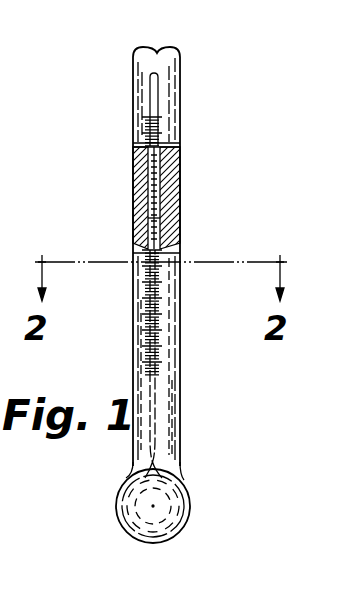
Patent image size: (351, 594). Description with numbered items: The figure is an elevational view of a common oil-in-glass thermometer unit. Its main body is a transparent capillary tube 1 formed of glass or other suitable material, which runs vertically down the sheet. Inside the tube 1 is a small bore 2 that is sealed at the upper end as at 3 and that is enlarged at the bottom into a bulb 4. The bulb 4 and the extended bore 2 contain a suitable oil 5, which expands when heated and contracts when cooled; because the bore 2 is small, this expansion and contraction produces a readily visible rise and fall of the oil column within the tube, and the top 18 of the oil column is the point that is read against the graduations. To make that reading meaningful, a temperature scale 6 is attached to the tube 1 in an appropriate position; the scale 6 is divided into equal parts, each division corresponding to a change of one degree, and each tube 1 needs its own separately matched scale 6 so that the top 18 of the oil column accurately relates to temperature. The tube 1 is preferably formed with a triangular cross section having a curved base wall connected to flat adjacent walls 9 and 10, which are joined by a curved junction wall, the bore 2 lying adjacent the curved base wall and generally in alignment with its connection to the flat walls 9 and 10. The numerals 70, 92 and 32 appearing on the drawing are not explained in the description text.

The capillary tube 1 is at (188, 111).
The bore 2 is at (165, 215).
The sealed upper end 3 is at (158, 51).
The bulb 4 is at (188, 495).
The oil 5 is at (152, 172).
The temperature scale 6 is at (142, 272).
The flat wall 9 is at (137, 309).
The flat wall 10 is at (177, 315).
The top of the oil column 18 is at (161, 165).
The 70 degree mark 70 is at (133, 218).
The scale numeral 92 is at (168, 131).
The scale numeral 32 is at (162, 353).